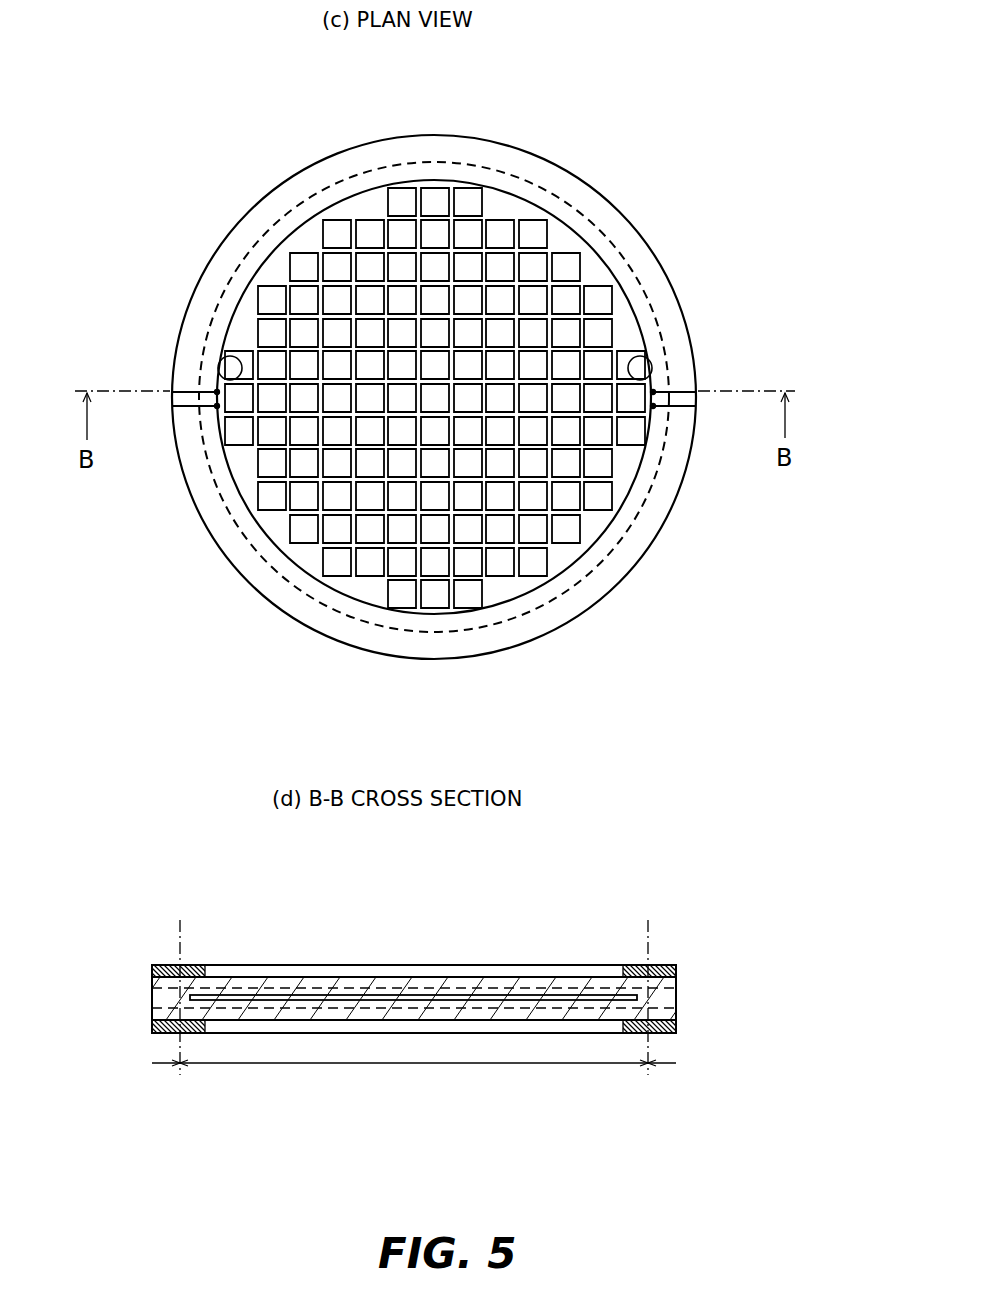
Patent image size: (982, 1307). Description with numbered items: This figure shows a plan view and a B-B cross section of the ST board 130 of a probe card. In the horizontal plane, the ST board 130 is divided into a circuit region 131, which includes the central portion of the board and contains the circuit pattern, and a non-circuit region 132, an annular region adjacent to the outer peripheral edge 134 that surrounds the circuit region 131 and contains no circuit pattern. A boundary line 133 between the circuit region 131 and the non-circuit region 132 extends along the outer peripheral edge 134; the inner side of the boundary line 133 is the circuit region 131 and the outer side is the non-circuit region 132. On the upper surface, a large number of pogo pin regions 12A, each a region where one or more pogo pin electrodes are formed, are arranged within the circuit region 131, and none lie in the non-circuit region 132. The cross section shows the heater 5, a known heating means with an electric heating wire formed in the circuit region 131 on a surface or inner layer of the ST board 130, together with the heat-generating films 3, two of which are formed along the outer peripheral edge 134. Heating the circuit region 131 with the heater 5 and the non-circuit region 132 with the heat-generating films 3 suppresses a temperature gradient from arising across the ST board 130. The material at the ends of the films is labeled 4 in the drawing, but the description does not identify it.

The ST board 130 is at (556, 77).
The heat-generating film 3 is at (289, 193).
The adhesive 4 is at (226, 355).
The heater 5 is at (421, 997).
The pogo pin region 12A is at (265, 300).
The circuit region 131 is at (562, 244).
The non-circuit region 132 is at (662, 290).
The boundary line 133 is at (629, 262).
The outer peripheral edge 134 is at (683, 490).